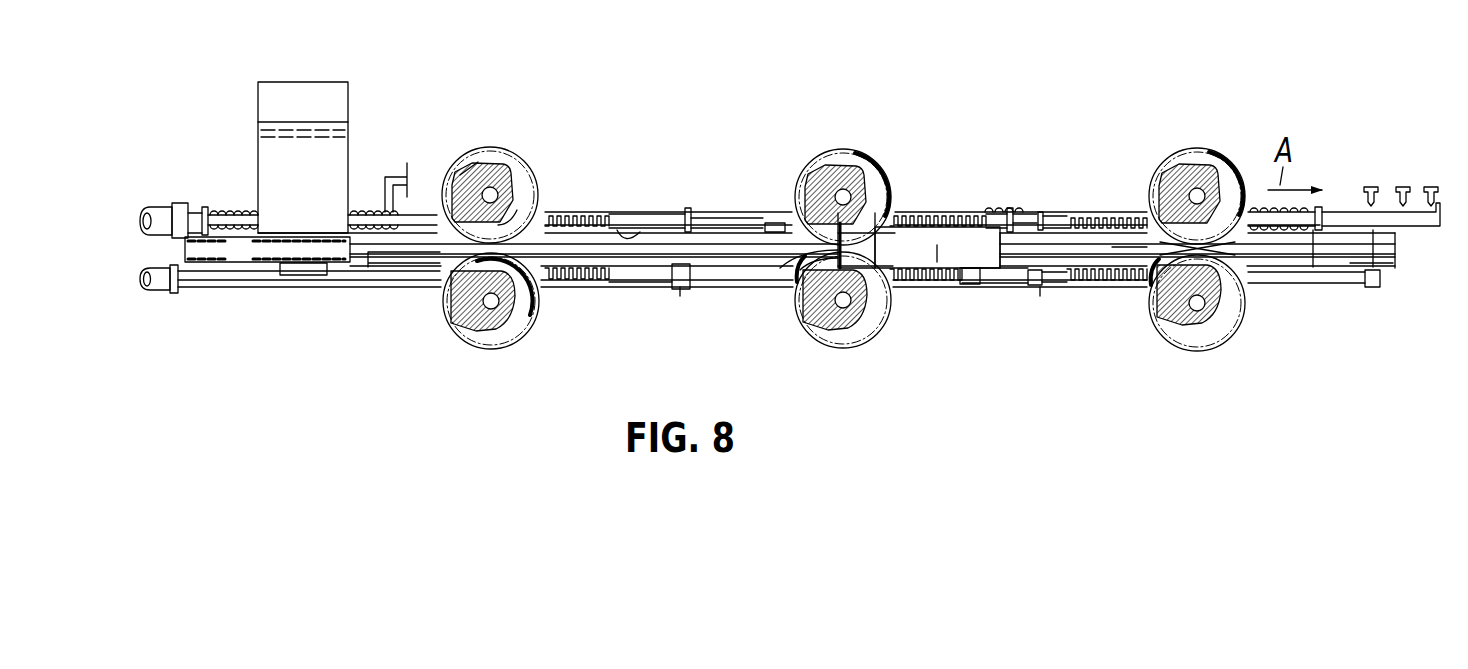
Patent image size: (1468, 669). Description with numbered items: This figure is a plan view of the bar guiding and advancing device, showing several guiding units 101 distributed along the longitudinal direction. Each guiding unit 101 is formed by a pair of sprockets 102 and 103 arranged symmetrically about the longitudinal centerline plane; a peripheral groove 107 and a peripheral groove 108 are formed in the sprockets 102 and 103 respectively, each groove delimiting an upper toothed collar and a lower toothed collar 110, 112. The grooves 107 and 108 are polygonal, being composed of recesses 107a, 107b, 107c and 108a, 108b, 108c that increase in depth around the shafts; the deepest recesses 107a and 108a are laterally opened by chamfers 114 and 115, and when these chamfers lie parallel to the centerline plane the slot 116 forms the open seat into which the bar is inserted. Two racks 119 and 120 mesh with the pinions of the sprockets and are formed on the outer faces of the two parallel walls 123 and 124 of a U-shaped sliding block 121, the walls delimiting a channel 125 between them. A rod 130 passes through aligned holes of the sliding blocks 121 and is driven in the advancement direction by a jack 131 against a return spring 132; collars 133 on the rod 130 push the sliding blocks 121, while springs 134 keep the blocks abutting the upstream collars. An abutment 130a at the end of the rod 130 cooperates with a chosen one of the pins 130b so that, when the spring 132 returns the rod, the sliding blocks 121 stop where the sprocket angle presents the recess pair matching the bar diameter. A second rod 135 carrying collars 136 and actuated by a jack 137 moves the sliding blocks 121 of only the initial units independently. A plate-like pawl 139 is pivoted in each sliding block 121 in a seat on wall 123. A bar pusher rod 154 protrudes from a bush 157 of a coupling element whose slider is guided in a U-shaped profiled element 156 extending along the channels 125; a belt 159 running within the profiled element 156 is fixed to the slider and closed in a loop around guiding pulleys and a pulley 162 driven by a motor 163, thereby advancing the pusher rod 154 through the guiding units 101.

The guiding unit 101 is at (465, 98).
The sprocket 102 is at (444, 152).
The sprocket 103 is at (452, 346).
The peripheral groove 107 is at (836, 160).
The recess 107a is at (517, 210).
The recess 107b is at (510, 185).
The recess 107c is at (494, 162).
The peripheral groove 108 is at (838, 335).
The recess 108a is at (522, 298).
The recess 108b is at (515, 312).
The recess 108c is at (490, 330).
The lower toothed collar 110 is at (522, 155).
The lower toothed collar 112 is at (443, 305).
The chamfer 114 is at (792, 226).
The chamfer 115 is at (815, 253).
The slot 116 is at (822, 248).
The rack 119 is at (605, 214).
The rack 120 is at (587, 275).
The sliding block 121 is at (620, 292).
The wall 123 is at (988, 226).
The wall 124 is at (945, 286).
The channel 125 is at (632, 237).
The rod 130 is at (700, 208).
The abutment 130a is at (1441, 203).
The pins 130b is at (1371, 186).
The jack 131 is at (155, 213).
The return spring 132 is at (242, 208).
The collars 133 is at (693, 208).
The springs 134 is at (998, 210).
The rod 135 is at (1282, 290).
The collars 136 is at (681, 296).
The jack 137 is at (158, 290).
The plate-like pawl 139 is at (1056, 221).
The bar pusher rod 154 is at (1112, 247).
The U-shaped profiled element 156 is at (380, 258).
The bush 157 is at (938, 245).
The belt 159 is at (245, 250).
The pulley 162 is at (268, 263).
The motor 163 is at (292, 90).